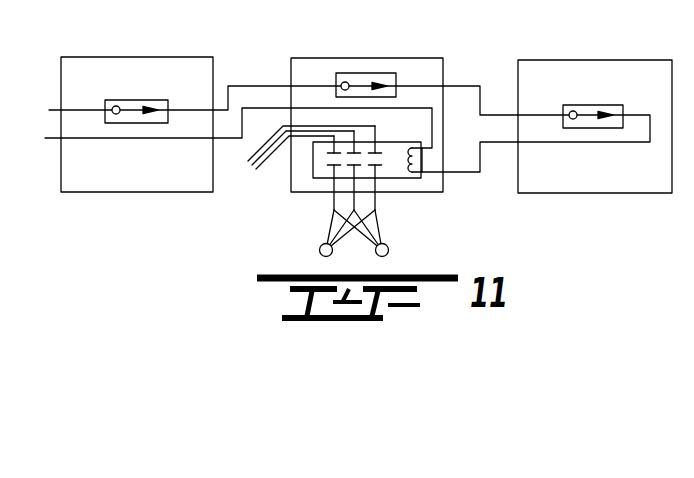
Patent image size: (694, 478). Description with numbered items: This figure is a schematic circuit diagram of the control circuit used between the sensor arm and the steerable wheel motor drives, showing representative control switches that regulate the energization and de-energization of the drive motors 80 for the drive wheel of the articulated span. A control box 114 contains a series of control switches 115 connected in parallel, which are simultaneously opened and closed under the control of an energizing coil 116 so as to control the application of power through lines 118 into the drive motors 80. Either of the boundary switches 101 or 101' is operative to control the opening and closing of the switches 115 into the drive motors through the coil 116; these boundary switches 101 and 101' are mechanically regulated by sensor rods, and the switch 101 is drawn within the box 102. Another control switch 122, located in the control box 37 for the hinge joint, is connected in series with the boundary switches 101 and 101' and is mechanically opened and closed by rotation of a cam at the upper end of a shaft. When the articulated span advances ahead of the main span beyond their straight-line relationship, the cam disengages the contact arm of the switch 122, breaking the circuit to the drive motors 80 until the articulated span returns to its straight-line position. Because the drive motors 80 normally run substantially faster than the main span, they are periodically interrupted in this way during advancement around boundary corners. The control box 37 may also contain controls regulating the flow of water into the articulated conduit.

The control box 37 is at (143, 57).
The control switch 122 is at (137, 100).
The boundary switch 101' is at (380, 60).
The remote unit 102 is at (618, 60).
The boundary switch 101 is at (597, 102).
The control box 114 is at (296, 193).
The control switches 115 is at (387, 179).
The energizing coil 116 is at (413, 172).
The lines 118 is at (280, 143).
The drive motors 80 is at (320, 250).